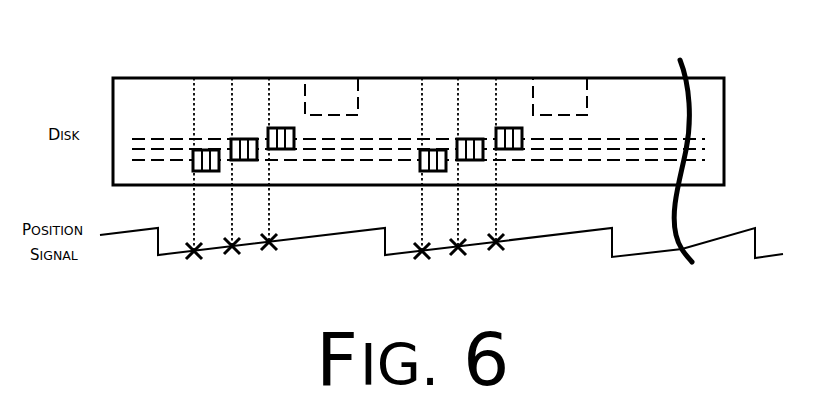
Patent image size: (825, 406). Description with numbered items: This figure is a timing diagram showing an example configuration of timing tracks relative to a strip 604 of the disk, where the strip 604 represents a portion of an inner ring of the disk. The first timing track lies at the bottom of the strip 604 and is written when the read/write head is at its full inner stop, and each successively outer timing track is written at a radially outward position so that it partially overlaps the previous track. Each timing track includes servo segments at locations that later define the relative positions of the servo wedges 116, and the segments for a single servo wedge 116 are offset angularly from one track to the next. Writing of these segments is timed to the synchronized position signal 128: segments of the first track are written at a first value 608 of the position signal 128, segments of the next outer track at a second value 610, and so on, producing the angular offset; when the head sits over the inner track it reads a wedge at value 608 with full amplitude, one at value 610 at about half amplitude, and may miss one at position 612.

The strip 604 is at (112, 93).
The servo wedge 116 is at (331, 87).
The position signal 128 is at (127, 231).
The first value 608 is at (190, 258).
The second value 610 is at (227, 252).
The position 612 is at (263, 247).